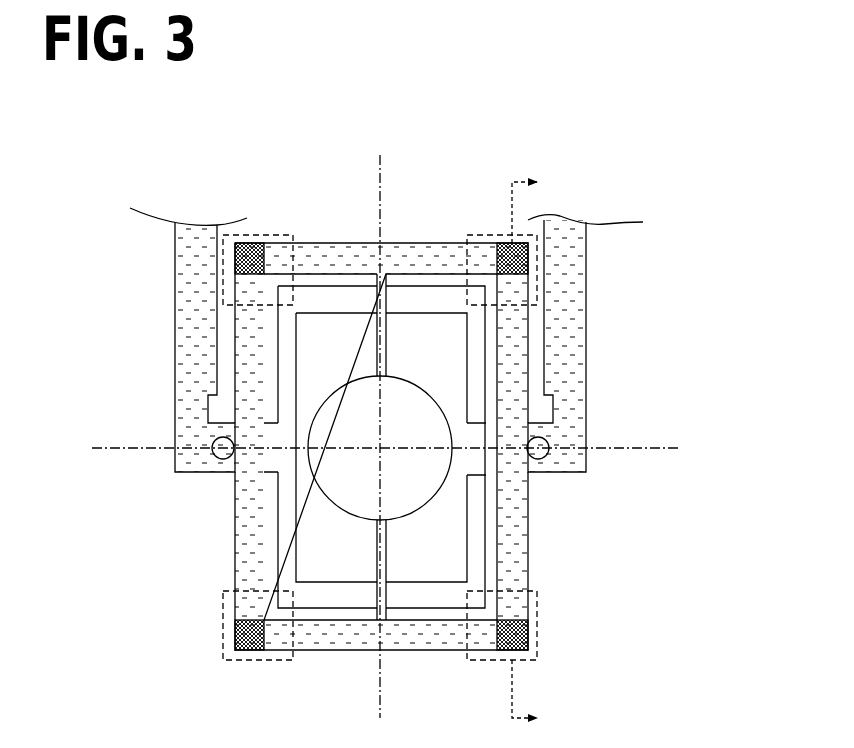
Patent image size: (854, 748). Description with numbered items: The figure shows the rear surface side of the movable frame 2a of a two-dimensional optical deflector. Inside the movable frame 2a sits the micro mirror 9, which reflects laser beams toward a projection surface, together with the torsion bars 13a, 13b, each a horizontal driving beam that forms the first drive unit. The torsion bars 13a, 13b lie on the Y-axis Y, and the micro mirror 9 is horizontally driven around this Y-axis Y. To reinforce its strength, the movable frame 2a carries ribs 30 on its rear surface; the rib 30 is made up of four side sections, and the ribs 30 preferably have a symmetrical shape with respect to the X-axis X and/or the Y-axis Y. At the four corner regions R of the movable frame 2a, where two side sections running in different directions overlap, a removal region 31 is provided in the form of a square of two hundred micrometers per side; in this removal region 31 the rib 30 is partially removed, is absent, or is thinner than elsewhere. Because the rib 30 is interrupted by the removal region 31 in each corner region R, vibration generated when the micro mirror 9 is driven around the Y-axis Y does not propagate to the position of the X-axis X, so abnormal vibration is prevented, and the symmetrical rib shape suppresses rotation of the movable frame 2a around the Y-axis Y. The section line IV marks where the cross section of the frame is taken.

The movable frame 2a is at (386, 421).
The micro mirror 9 is at (414, 428).
The torsion bar 13a is at (386, 335).
The torsion bar 13b is at (387, 552).
The rib 30 is at (310, 645).
The removal region 31 is at (247, 651).
The corner region R is at (272, 234).
The X-axis X is at (92, 447).
The Y-axis Y is at (378, 166).
The section line IV is at (539, 451).